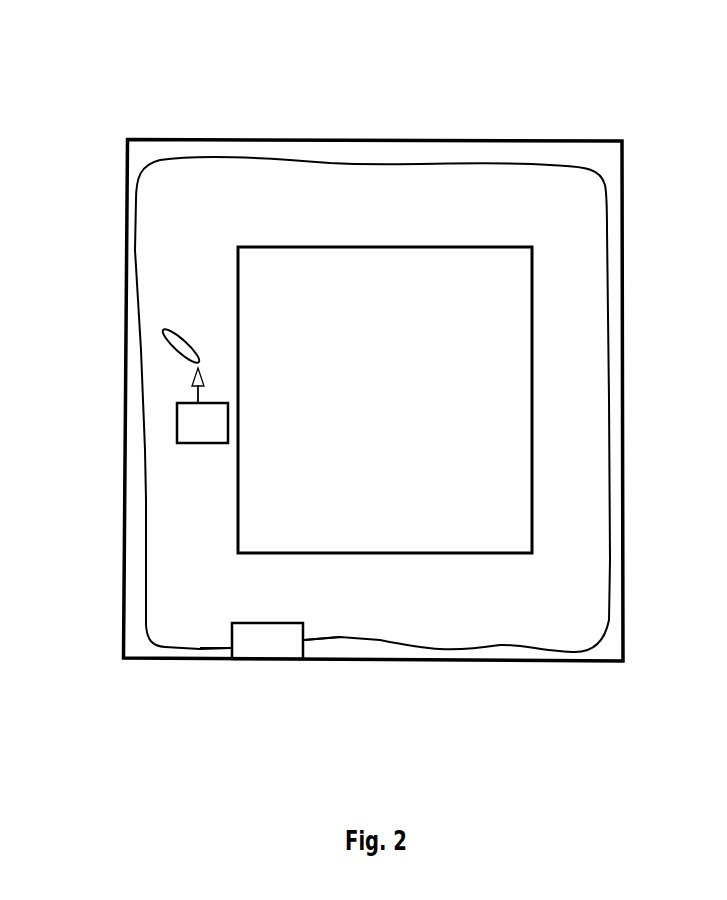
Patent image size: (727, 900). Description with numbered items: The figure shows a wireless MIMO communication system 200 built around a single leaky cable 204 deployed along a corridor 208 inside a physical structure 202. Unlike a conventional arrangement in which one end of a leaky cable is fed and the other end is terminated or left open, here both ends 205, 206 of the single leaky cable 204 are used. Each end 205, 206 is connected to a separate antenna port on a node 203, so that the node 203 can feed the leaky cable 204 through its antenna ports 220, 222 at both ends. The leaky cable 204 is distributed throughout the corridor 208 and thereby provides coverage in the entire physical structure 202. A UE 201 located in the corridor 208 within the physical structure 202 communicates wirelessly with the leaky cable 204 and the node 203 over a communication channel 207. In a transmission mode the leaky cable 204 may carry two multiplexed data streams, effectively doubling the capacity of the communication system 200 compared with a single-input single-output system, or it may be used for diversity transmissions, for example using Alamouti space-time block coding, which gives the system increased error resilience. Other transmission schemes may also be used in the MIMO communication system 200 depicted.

The wireless MIMO communication system 200 is at (140, 78).
The UE 201 is at (177, 431).
The physical structure 202 is at (503, 140).
The node 203 is at (273, 655).
The leaky cable 204 is at (143, 542).
The end of leaky cable 205 is at (185, 648).
The end of leaky cable 206 is at (367, 637).
The communication channel 207 is at (163, 330).
The corridor 208 is at (140, 150).
The antenna port 220 is at (230, 645).
The antenna port 222 is at (305, 640).